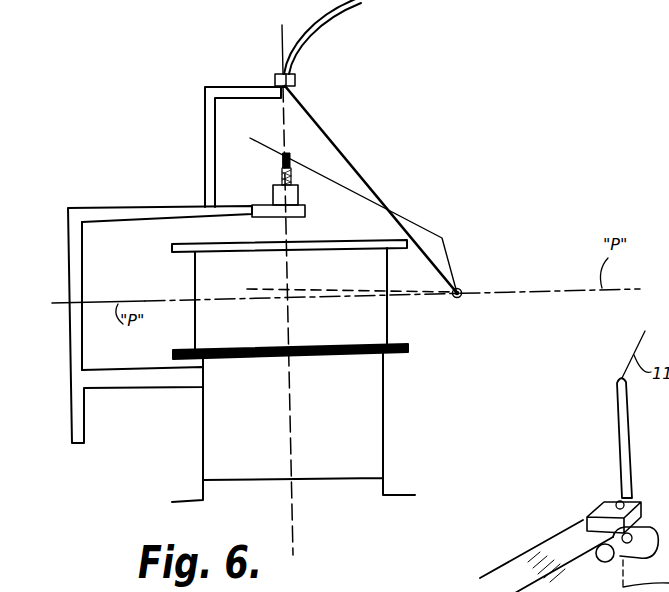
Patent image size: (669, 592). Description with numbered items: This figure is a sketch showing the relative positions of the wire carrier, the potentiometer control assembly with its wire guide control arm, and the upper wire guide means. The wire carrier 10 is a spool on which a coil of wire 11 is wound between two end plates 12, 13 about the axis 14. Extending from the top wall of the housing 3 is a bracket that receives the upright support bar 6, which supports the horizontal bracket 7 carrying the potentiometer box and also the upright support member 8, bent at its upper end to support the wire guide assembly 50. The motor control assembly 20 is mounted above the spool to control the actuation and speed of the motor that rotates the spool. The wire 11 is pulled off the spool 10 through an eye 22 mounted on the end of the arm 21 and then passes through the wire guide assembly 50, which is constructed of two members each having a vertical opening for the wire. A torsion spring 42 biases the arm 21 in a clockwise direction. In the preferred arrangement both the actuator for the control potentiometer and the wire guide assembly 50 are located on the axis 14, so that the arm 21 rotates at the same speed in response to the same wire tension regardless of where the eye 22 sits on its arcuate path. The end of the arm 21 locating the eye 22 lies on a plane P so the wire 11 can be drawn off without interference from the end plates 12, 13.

The housing 3 is at (386, 407).
The upright support bar 6 is at (80, 287).
The horizontal bracket 7 is at (121, 208).
The upright support member 8 is at (205, 120).
The wire carrier 10 is at (398, 297).
The wire 11 is at (333, 8).
The end plate 12 is at (298, 242).
The end plate 13 is at (328, 350).
The axis 14 is at (291, 318).
The motor control assembly 20 is at (300, 178).
The arm 21 is at (368, 197).
The eye 22 is at (460, 290).
The torsion spring 42 is at (278, 176).
The wire guide assembly 50 is at (294, 67).